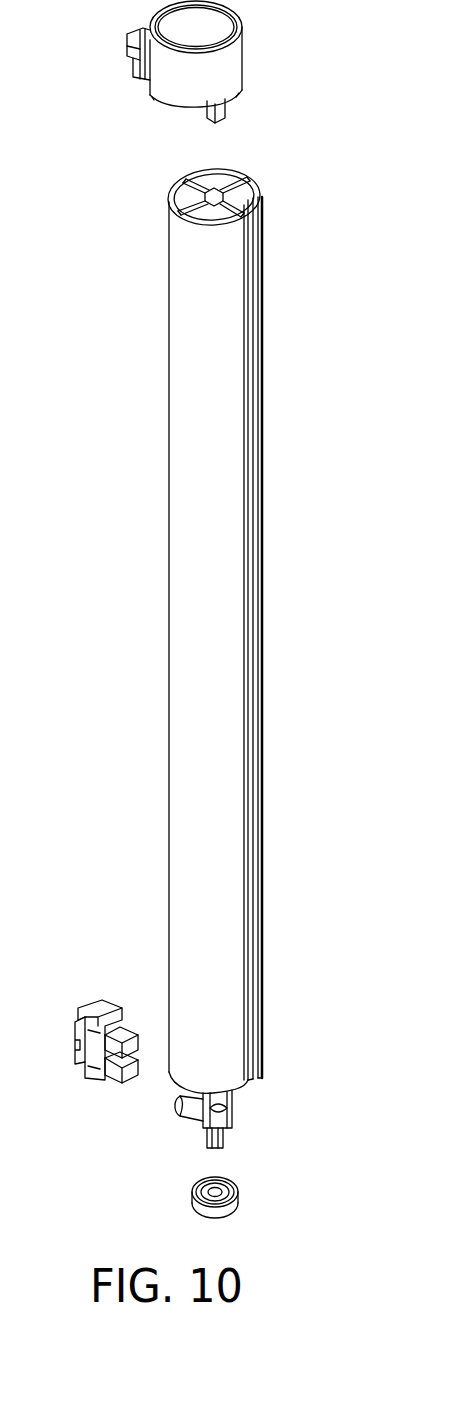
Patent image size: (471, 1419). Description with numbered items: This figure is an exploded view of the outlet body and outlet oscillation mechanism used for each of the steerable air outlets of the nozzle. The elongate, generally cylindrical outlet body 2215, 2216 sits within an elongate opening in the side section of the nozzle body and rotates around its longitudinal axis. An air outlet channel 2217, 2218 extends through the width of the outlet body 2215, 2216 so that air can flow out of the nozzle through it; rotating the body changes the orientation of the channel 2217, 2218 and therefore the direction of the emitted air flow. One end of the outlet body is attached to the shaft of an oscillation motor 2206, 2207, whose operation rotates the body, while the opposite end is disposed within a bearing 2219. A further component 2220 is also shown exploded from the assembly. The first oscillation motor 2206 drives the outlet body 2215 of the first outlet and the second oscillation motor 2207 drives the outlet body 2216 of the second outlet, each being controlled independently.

The cap 2206 is at (237, 63).
The cap 2207 is at (232, 62).
The tube body 2215 is at (178, 603).
The tube body 2216 is at (170, 657).
The side strip 2217 is at (255, 732).
The side strip 2218 is at (302, 638).
The ring 2219 is at (237, 1198).
The ring 2220 is at (265, 1197).